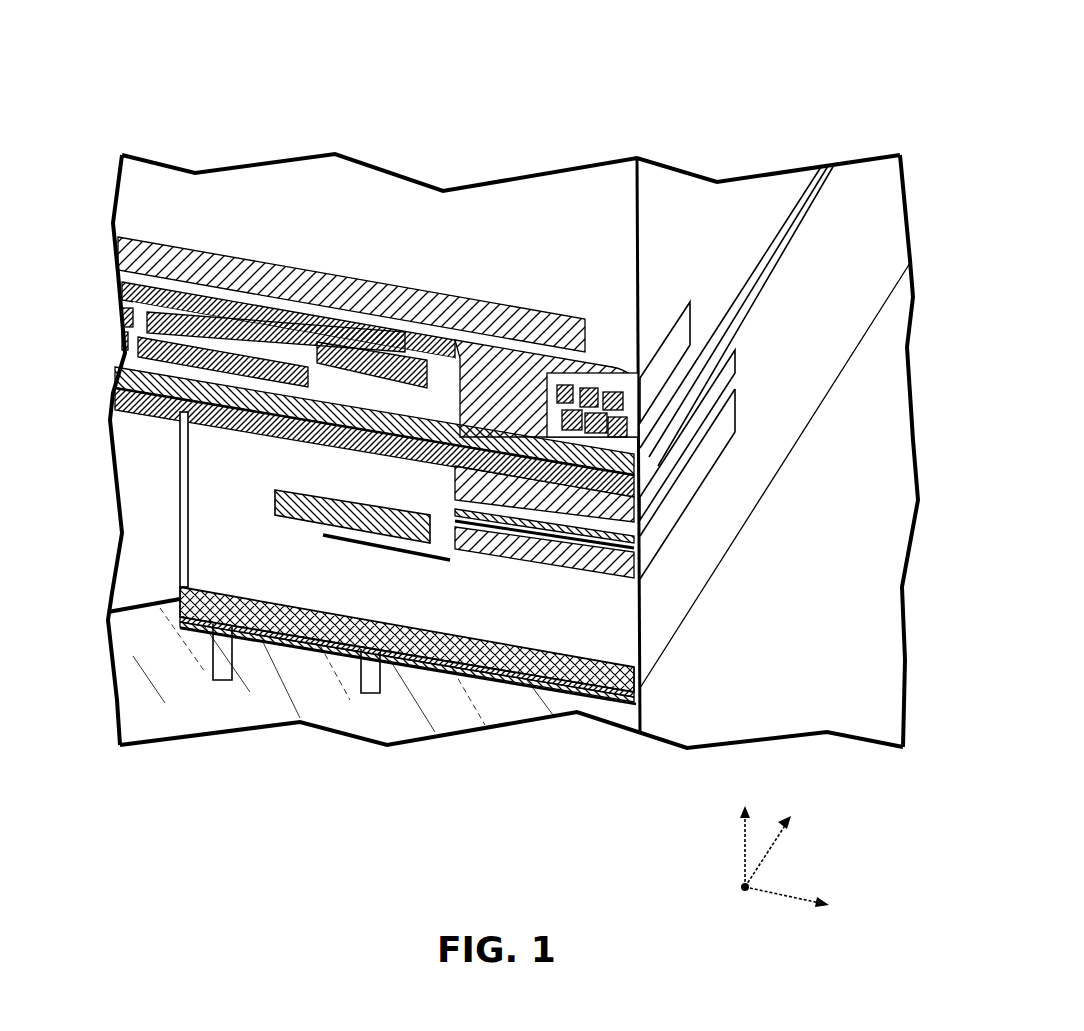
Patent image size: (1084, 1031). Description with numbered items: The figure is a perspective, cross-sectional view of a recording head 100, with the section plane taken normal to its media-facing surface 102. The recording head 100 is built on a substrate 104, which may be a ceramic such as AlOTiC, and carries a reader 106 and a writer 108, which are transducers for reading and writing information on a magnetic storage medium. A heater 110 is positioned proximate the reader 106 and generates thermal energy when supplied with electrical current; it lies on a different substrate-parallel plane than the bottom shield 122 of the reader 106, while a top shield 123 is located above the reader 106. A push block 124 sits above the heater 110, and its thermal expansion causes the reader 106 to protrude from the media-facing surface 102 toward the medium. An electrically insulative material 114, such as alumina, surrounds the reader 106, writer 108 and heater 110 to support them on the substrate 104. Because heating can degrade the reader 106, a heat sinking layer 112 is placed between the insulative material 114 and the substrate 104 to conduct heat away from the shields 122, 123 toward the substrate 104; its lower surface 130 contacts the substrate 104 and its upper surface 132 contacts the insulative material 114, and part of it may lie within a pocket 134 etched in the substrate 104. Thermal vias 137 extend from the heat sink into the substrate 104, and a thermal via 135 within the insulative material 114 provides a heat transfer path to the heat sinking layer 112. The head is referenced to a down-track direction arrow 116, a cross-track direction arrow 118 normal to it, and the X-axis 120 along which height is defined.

The recording head 100 is at (852, 86).
The media-facing surface 102 is at (829, 640).
The substrate 104 is at (172, 695).
The reader 106 is at (660, 558).
The writer 108 is at (683, 372).
The heater 110 is at (412, 562).
The heat sinking layer 112 is at (603, 703).
The electrically insulative material 114 is at (138, 437).
The down-track direction arrow 116 is at (743, 860).
The cross-track direction arrow 118 is at (778, 837).
The X-axis 120 is at (783, 895).
The bottom shield 122 is at (641, 569).
The top shield 123 is at (658, 550).
The push block 124 is at (292, 508).
The lower surface 130 is at (510, 680).
The upper surface 132 is at (238, 590).
The pocket 134 is at (567, 692).
The thermal via 135 is at (183, 478).
The thermal vias 137 is at (218, 676).